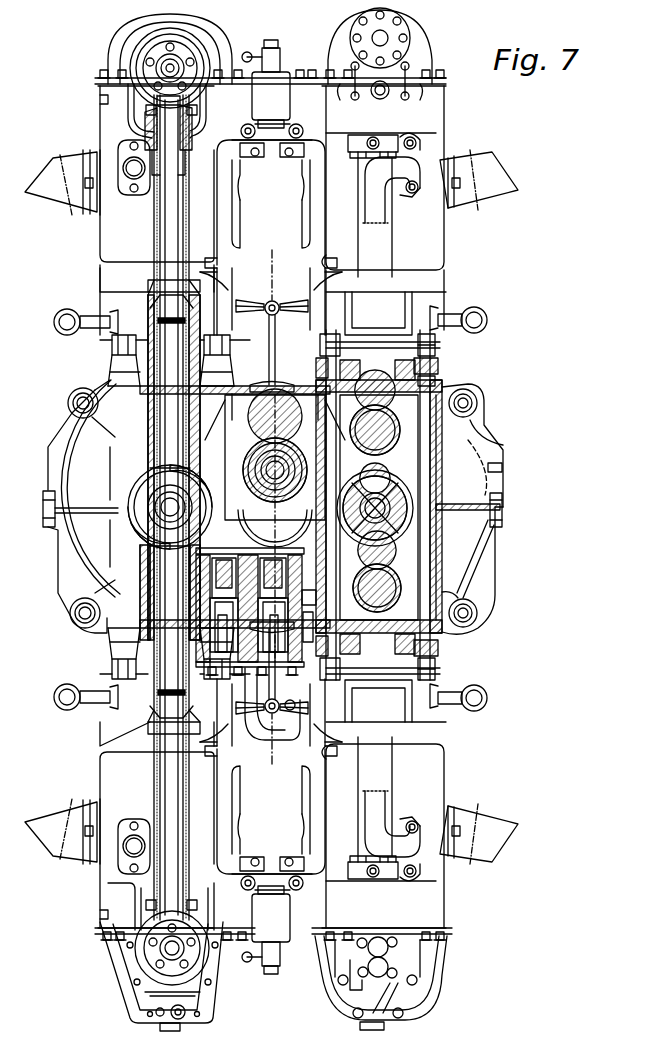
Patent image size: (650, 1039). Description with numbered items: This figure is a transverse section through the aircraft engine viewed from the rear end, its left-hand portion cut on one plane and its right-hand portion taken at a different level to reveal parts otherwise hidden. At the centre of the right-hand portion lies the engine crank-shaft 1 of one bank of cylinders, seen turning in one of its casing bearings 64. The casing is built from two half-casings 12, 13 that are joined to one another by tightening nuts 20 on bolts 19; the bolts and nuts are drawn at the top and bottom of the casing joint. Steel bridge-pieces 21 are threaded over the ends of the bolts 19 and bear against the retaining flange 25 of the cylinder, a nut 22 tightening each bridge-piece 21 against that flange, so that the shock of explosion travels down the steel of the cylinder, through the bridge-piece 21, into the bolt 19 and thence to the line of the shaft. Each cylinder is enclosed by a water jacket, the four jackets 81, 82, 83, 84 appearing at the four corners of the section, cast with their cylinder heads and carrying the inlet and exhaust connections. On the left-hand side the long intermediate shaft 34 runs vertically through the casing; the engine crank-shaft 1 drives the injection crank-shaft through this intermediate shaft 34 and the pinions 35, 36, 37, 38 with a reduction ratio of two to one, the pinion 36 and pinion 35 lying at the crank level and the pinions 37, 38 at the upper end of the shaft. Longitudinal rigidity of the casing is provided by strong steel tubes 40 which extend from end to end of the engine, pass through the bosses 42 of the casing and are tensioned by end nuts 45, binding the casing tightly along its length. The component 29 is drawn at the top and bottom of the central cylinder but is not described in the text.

The engine crank-shaft 1 is at (166, 512).
The half-casing 12 is at (378, 392).
The half-casing 13 is at (384, 630).
The bolt 19 is at (420, 468).
The nut 20 is at (434, 382).
The bridge-piece 21 is at (440, 372).
The nut 22 is at (432, 348).
The retaining flange 25 is at (358, 382).
The valve gear 29 is at (276, 90).
The intermediate shaft 34 is at (164, 236).
The pinion 35 is at (160, 528).
The pinion 36 is at (150, 480).
The pinion 37 is at (160, 100).
The pinion 38 is at (152, 44).
The steel tube 40 is at (482, 613).
The boss 42 is at (473, 594).
The end nut 45 is at (84, 626).
The bearing 64 is at (402, 488).
The jacket 81 is at (438, 110).
The jacket 82 is at (440, 782).
The jacket 83 is at (110, 106).
The jacket 84 is at (118, 788).